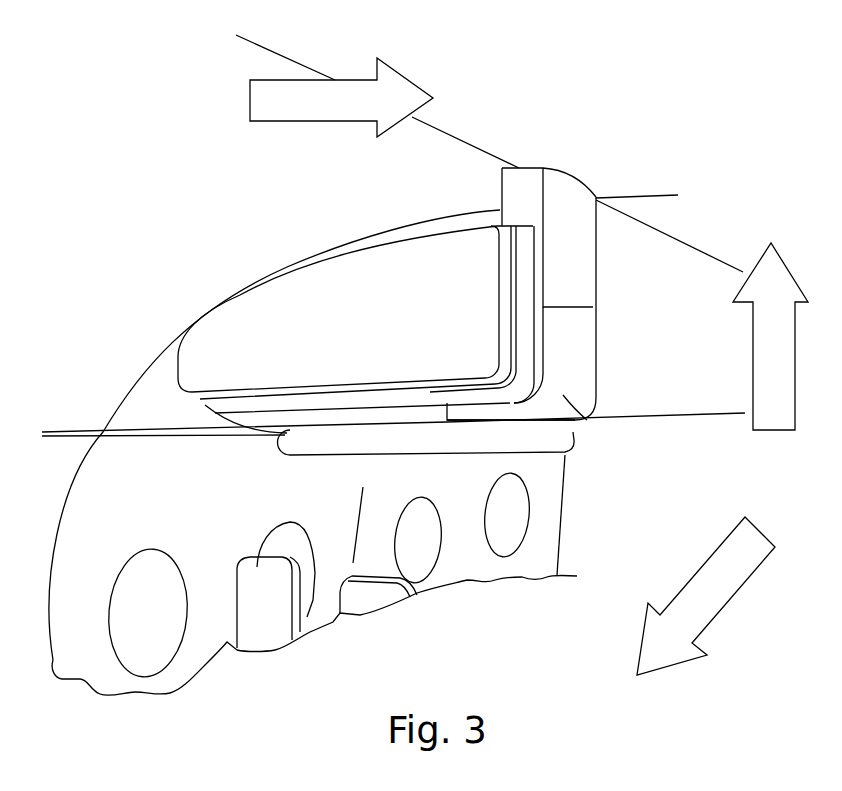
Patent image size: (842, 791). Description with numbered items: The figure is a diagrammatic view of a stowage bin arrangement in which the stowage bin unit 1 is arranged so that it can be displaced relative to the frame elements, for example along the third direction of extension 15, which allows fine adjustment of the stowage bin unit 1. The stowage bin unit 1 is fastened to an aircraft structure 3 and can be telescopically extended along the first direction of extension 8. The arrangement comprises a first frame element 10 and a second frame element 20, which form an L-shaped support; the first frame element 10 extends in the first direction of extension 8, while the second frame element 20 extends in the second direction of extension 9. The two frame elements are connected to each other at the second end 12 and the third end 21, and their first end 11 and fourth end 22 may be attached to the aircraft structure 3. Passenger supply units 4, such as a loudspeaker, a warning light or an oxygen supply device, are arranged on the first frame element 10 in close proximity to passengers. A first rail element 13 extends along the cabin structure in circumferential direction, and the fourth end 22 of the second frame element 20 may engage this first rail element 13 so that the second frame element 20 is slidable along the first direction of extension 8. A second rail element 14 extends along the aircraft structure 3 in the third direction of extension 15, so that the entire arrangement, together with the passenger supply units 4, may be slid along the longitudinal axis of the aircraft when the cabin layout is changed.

The stowage bin unit 1 is at (477, 300).
The aircraft structure 3 is at (152, 400).
The passenger supply unit 4 is at (345, 457).
The first direction of extension 8 is at (341, 97).
The second direction of extension 9 is at (770, 336).
The first frame element 10 is at (493, 423).
The first end 11 is at (274, 433).
The second end 12 is at (622, 424).
The third end 21 is at (563, 395).
The first rail element 13 is at (653, 194).
The second rail element 14 is at (683, 235).
The third direction of extension 15 is at (706, 596).
The second frame element 20 is at (568, 327).
The fourth end 22 is at (567, 202).